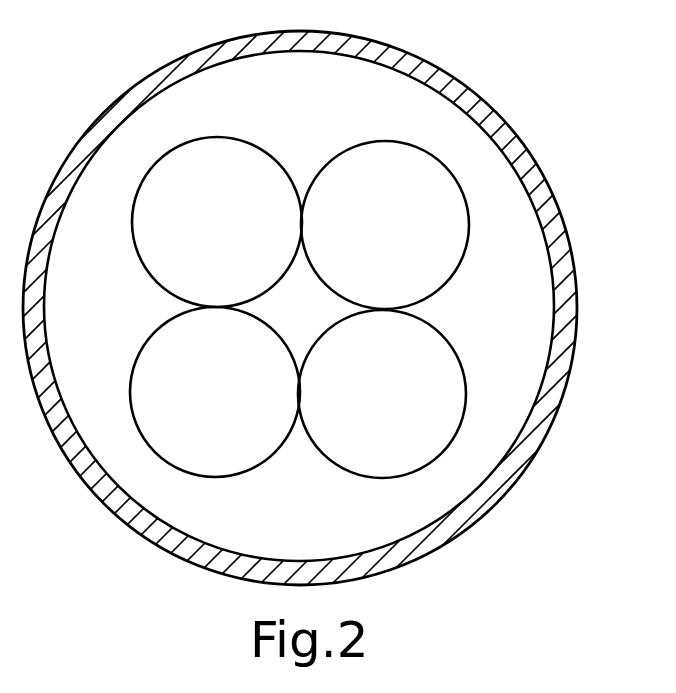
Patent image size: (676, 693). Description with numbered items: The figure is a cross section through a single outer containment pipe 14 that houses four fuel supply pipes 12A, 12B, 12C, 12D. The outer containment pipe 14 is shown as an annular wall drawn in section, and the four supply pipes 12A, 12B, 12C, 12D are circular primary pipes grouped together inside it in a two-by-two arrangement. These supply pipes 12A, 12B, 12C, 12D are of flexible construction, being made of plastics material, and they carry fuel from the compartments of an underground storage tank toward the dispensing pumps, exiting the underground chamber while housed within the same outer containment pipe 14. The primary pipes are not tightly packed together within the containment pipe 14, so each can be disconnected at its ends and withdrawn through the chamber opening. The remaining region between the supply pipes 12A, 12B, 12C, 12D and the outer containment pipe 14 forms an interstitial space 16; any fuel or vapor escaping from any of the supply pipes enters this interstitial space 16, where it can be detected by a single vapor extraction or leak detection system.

The outer containment pipe 14 is at (511, 471).
The fuel supply pipe 12A is at (243, 243).
The fuel supply pipe 12B is at (408, 246).
The fuel supply pipe 12C is at (242, 412).
The fuel supply pipe 12D is at (408, 414).
The interstitial space 16 is at (311, 530).